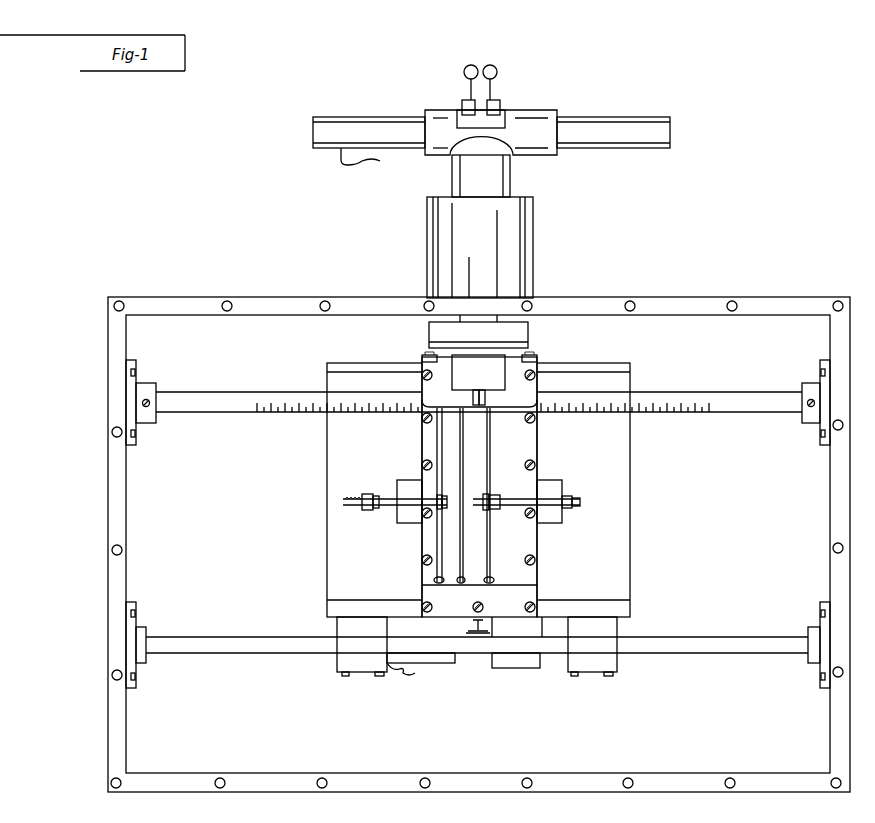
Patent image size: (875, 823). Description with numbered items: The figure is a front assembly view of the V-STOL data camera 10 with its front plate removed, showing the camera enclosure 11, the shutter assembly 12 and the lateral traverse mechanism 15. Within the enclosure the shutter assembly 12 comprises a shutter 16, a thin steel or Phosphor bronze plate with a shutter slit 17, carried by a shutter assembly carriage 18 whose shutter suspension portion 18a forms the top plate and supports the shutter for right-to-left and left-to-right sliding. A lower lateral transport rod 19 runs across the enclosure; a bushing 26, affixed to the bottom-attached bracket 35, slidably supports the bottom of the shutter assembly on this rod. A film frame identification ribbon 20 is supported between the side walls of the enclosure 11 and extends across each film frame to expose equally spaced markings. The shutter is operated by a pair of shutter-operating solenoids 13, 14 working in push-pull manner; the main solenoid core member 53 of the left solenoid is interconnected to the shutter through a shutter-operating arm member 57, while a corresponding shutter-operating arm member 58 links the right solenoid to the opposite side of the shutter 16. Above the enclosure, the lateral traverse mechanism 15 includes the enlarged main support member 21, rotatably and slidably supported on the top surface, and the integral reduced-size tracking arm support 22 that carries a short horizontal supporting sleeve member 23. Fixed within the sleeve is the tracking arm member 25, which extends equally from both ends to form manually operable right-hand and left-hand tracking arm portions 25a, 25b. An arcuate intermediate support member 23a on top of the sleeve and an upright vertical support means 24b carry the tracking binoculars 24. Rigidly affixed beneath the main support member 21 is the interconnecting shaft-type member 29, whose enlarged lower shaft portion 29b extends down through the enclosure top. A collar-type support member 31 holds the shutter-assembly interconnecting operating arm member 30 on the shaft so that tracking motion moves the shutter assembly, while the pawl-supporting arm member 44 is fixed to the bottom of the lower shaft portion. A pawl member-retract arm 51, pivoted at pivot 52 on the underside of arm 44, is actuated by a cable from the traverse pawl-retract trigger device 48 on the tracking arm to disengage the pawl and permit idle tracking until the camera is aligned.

The V-STOL data camera 10 is at (93, 477).
The camera enclosure 11 is at (108, 712).
The shutter assembly 12 is at (547, 445).
The shutter-operating solenoid 13 is at (406, 478).
The shutter-operating solenoid 14 is at (553, 524).
The lateral traverse mechanism 15 is at (614, 108).
The shutter 16 is at (440, 542).
The shutter slit 17 is at (464, 448).
The shutter assembly carriage 18 is at (540, 472).
The shutter suspension portion 18a is at (420, 388).
The lateral transport rod 19 is at (248, 637).
The film frame identification ribbon 20 is at (662, 392).
The main support member 21 is at (434, 240).
The tracking arm support 22 is at (461, 173).
The supporting sleeve member 23 is at (540, 150).
The intermediate support member 23a is at (503, 120).
The tracking binoculars 24 is at (496, 70).
The vertical support means 24b is at (478, 91).
The tracking arm member 25 is at (350, 112).
The right-hand tracking arm portion 25a is at (666, 133).
The left-hand tracking arm portion 25b is at (323, 133).
The bushing 26 is at (357, 670).
The interconnecting shaft-type member 29 is at (484, 314).
The lower shaft portion 29b is at (480, 385).
The shutter-assembly interconnecting operating arm member 30 is at (424, 357).
The collar-type support member 31 is at (520, 333).
The bottom-attached bracket 35 is at (352, 603).
The pawl-supporting arm member 44 is at (537, 386).
The traverse pawl-retract trigger device 48 is at (342, 160).
The pawl member-retract arm 51 is at (471, 399).
The pivot 52 is at (487, 399).
The main solenoid core member 53 is at (385, 508).
The shutter-operating arm member 57 is at (383, 492).
The shutter-operating arm member 58 is at (562, 496).